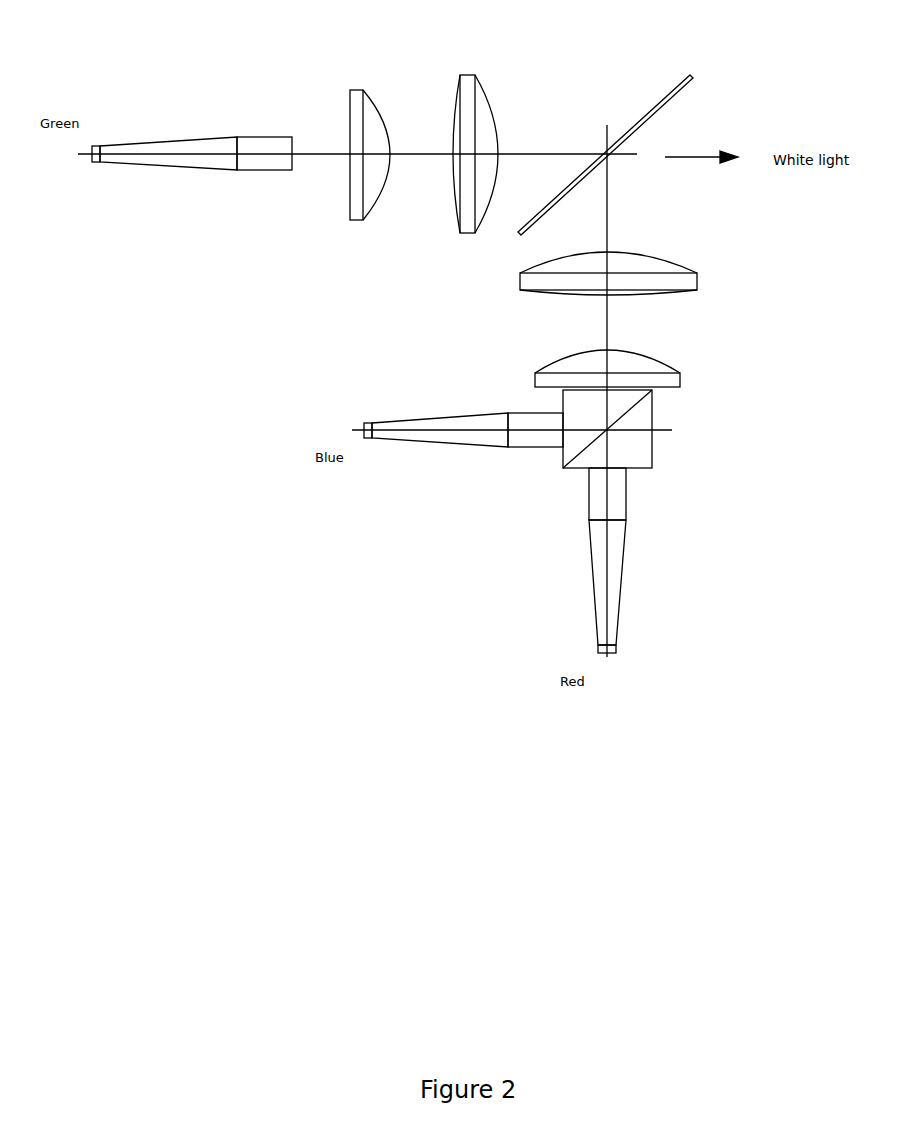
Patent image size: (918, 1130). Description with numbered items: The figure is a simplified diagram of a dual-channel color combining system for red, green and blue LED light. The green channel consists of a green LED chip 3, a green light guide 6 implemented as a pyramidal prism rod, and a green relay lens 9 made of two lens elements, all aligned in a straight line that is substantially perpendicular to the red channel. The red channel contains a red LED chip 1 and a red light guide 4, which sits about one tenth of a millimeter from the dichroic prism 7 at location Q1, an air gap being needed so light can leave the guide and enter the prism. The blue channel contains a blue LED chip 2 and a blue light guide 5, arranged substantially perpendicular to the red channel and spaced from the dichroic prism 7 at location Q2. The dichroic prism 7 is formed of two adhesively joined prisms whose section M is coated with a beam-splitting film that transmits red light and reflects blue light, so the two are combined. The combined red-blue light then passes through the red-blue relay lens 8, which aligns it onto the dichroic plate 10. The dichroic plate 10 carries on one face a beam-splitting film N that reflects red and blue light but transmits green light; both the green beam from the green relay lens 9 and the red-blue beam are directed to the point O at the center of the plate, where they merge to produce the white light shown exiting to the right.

The red LED chip 1 is at (612, 652).
The blue LED chip 2 is at (364, 425).
The green LED chip 3 is at (95, 155).
The red light guide 4 is at (608, 565).
The blue light guide 5 is at (440, 430).
The green light guide 6 is at (186, 148).
The dichroic prism 7 is at (587, 413).
The red-blue relay lens 8 is at (640, 327).
The green relay lens 9 is at (410, 112).
The dichroic plate 10 is at (623, 128).
The location Q1 is at (609, 471).
The location Q2 is at (561, 422).
The section M is at (622, 419).
The beam-splitting film N is at (646, 122).
The point o O is at (618, 169).